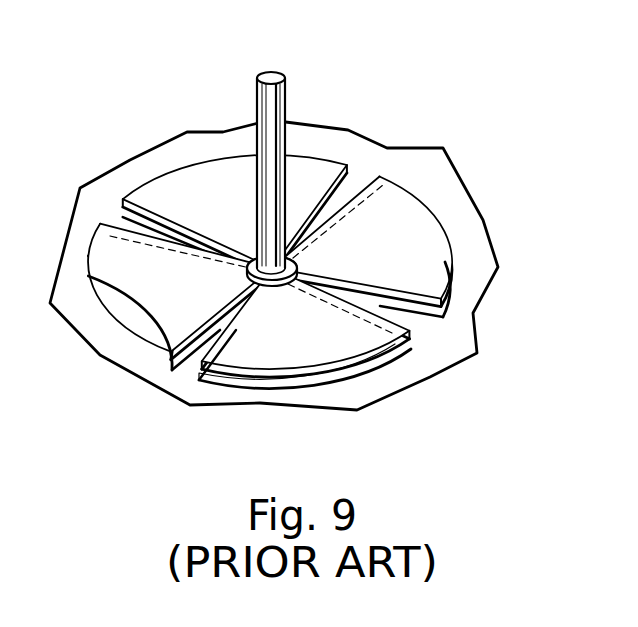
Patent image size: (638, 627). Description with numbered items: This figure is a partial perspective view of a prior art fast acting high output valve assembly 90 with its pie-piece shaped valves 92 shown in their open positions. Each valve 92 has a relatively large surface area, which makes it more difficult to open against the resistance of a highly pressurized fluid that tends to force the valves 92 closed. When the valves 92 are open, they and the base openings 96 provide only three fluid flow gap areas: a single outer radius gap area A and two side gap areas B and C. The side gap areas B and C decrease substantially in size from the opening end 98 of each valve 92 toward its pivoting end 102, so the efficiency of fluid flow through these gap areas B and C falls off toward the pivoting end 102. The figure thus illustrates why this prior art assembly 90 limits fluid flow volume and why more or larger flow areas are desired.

The fast acting high output valve assembly 90 is at (296, 252).
The pie-piece shaped valves 92 is at (256, 322).
The base openings 96 is at (234, 377).
The opening end 98 is at (447, 230).
The pivoting end 102 is at (298, 252).
The outer radius gap area A is at (466, 247).
The side gap area B is at (366, 172).
The side gap area C is at (418, 326).